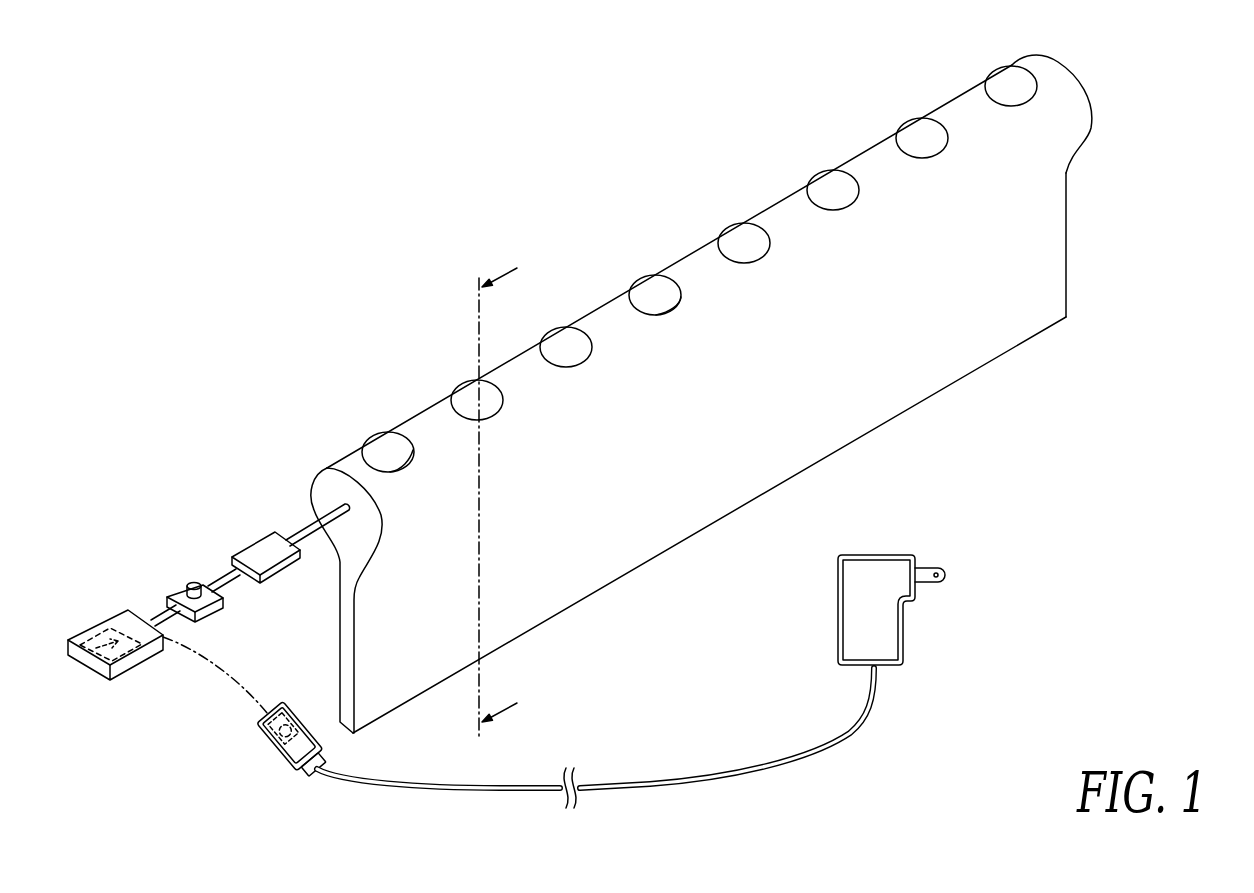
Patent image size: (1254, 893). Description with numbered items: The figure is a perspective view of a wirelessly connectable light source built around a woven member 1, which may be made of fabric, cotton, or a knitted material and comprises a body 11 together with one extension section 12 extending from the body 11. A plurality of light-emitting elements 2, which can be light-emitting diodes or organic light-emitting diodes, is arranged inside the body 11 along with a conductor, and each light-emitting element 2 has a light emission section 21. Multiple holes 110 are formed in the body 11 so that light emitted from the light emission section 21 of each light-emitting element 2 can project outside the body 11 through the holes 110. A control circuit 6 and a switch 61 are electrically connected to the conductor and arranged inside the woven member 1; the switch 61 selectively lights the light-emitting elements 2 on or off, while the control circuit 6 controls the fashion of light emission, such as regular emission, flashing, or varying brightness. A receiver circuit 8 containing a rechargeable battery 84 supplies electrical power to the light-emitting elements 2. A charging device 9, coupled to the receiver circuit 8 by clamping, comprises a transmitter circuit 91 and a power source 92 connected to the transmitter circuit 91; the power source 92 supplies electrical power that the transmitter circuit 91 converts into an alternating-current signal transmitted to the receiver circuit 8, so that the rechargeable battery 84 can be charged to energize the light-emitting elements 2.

The woven member 1 is at (1196, 107).
The body 11 is at (1095, 110).
The extension section 12 is at (1066, 239).
The light-emitting element 2 is at (908, 107).
The light emission section 21 is at (388, 435).
The holes 110 is at (682, 297).
The control circuit 6 is at (263, 553).
The switch 61 is at (192, 580).
The receiver circuit 8 is at (120, 623).
The rechargeable battery 84 is at (78, 648).
The charging device 9 is at (303, 728).
The transmitter circuit 91 is at (278, 748).
The power source 92 is at (876, 568).